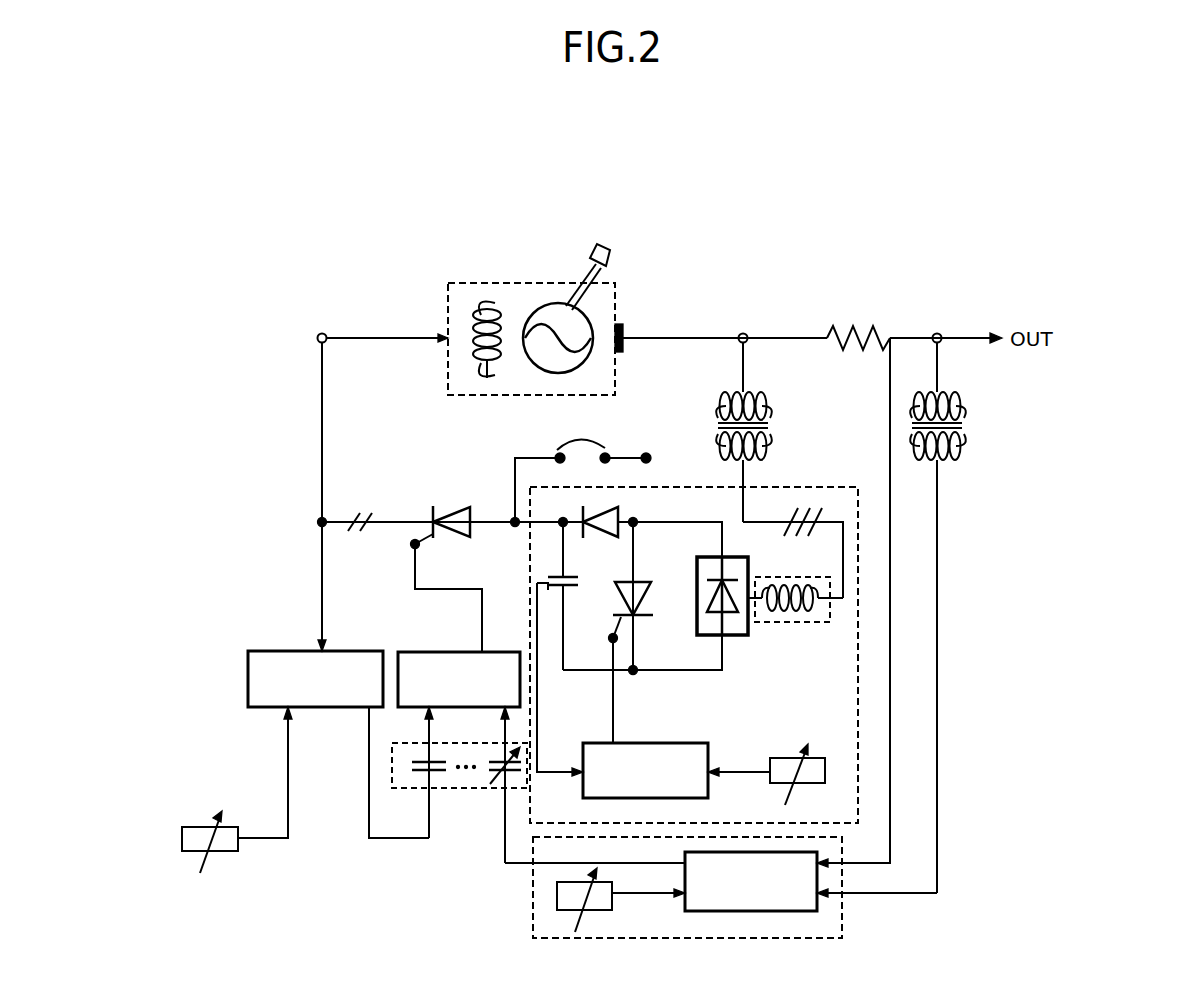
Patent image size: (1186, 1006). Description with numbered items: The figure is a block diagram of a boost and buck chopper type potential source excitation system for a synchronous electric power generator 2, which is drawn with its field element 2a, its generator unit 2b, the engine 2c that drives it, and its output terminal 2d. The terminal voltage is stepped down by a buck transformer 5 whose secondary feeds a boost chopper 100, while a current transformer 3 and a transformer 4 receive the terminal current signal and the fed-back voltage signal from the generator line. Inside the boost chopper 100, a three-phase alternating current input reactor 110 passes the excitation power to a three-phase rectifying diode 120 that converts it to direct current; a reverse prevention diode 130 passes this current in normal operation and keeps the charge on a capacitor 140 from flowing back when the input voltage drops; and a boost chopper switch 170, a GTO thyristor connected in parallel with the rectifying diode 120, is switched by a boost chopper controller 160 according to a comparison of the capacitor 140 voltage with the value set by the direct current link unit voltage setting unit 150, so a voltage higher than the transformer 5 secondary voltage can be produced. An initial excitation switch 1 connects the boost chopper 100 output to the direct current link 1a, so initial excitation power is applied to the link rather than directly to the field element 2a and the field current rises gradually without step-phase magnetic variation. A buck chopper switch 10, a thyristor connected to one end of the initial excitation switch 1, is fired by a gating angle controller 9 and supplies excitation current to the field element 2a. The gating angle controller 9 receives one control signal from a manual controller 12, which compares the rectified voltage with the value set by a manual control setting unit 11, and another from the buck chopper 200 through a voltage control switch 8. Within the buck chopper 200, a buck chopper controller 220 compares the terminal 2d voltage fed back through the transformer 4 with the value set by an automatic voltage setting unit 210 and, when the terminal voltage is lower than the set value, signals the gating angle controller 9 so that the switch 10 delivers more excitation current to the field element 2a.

The initial excitation switch 1 is at (600, 448).
The direct current link 1a is at (525, 492).
The electric power generator 2 is at (501, 283).
The field element 2a is at (487, 378).
The generator 2b is at (558, 373).
The engine 2c is at (604, 252).
The terminal of the electric power generator 2d is at (623, 326).
The current transformer 3 is at (866, 324).
The transformer 4 is at (965, 404).
The buck transformer 5 is at (777, 406).
The voltage control switch 8 is at (455, 788).
The gating angle controller 9 is at (432, 652).
The buck chopper switch 10 is at (455, 508).
The manual control setting unit 11 is at (208, 827).
The manual controller 12 is at (284, 651).
The boost chopper 100 is at (852, 673).
The three-phase alternating current input reactor 110 is at (790, 622).
The three-phase rectifying diode 120 is at (748, 568).
The reverse prevention diode 130 is at (616, 510).
The capacitor 140 is at (546, 576).
The direct current link unit voltage setting unit 150 is at (790, 758).
The boost chopper controller 160 is at (700, 743).
The thyristor switch 170 is at (638, 580).
The buck chopper 200 is at (830, 938).
The automatic voltage setting unit 210 is at (592, 910).
The buck chopper controller 220 is at (765, 911).